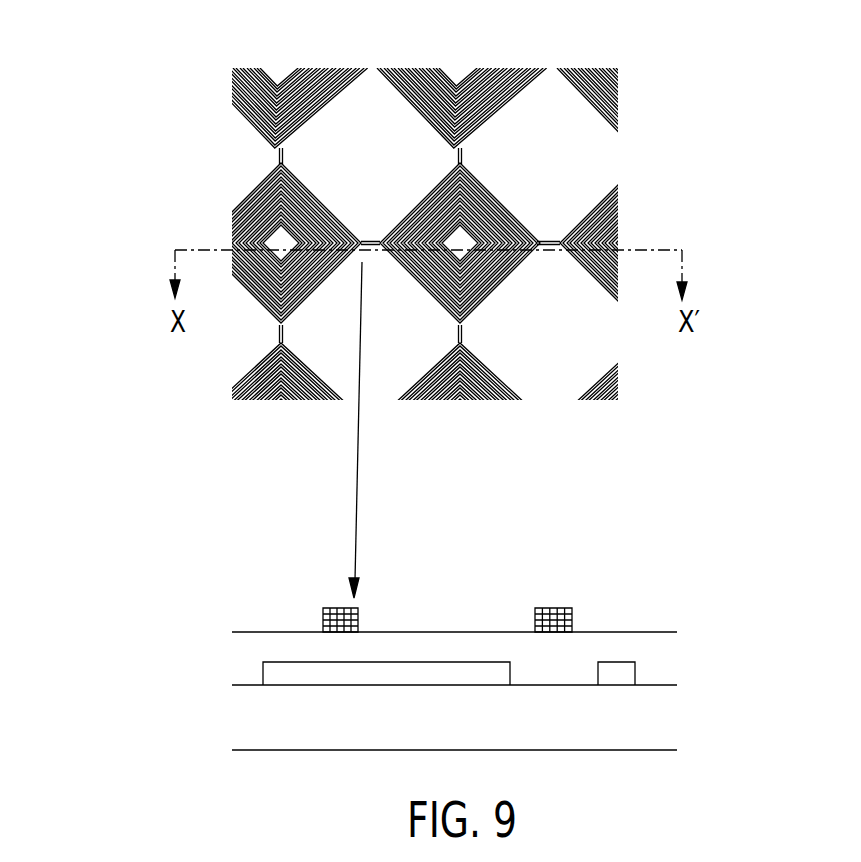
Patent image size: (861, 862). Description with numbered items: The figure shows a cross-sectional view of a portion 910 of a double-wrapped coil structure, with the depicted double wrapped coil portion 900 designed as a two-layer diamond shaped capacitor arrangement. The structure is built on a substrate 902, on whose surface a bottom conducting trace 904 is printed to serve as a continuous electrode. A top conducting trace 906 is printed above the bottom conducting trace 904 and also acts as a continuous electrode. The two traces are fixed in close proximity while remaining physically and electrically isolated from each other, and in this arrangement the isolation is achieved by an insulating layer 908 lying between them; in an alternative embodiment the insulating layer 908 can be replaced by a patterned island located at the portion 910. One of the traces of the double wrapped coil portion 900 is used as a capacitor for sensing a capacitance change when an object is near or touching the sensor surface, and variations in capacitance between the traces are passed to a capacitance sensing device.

The double wrapped coil portion 900 is at (640, 108).
The substrate 902 is at (680, 720).
The bottom conducting trace 904 is at (260, 668).
The top conducting trace 906 is at (318, 622).
The insulating layer 908 is at (680, 653).
The portion 910 is at (362, 190).